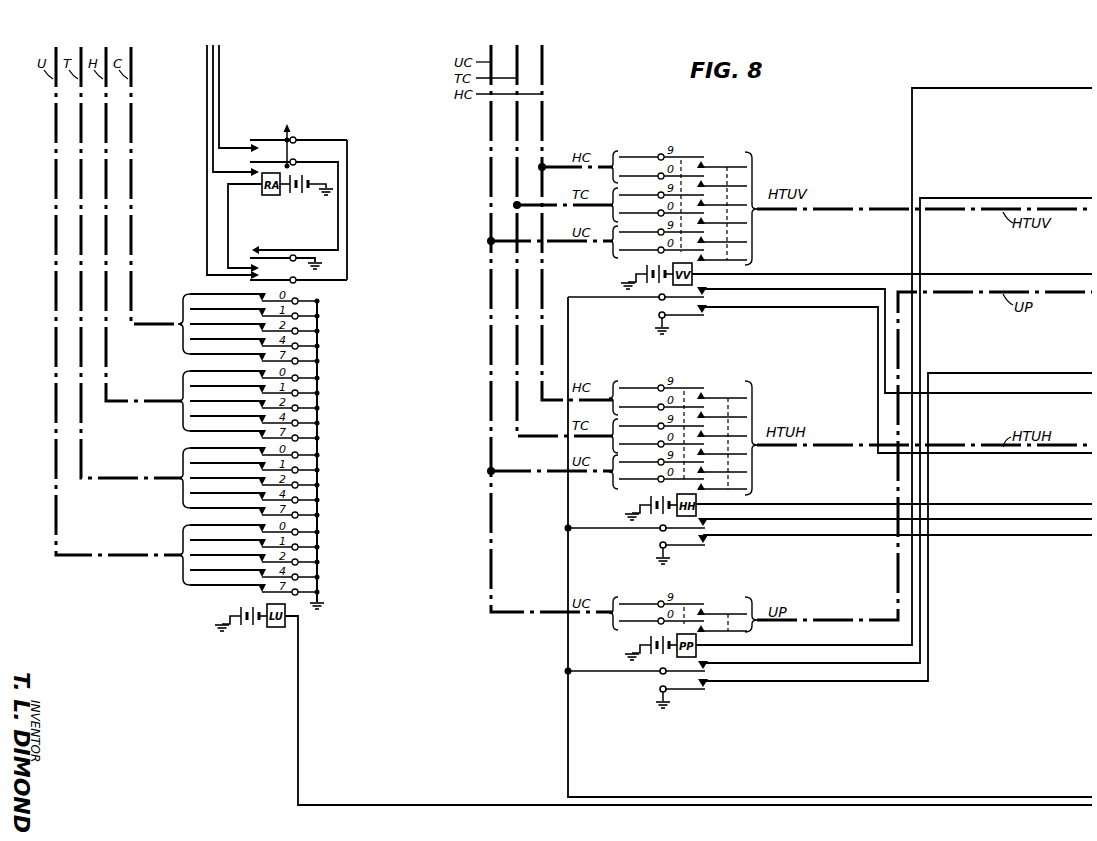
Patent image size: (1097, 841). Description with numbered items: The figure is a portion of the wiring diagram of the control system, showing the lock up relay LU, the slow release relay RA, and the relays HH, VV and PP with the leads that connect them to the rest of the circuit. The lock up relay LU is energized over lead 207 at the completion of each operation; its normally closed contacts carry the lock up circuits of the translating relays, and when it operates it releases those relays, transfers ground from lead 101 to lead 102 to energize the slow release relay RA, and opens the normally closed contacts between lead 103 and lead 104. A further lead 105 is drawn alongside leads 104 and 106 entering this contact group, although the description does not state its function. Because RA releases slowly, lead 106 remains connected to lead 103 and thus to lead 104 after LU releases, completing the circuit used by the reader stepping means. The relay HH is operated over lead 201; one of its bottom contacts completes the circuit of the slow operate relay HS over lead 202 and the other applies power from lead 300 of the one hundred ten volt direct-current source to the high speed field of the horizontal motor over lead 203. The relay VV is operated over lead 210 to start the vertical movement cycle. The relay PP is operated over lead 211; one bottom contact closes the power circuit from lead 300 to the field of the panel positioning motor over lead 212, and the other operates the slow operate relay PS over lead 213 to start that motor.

The lead 101 is at (338, 223).
The lead 102 is at (228, 223).
The lead 103 is at (314, 140).
The lead 104 is at (207, 62).
The conductor 105 is at (213, 78).
The lead 106 is at (219, 93).
The lead 201 is at (962, 504).
The lead 202 is at (1013, 537).
The lead 203 is at (1012, 519).
The lead 207 is at (430, 805).
The lead 210 is at (1003, 274).
The lead 211 is at (1008, 88).
The lead 212 is at (1008, 198).
The lead 213 is at (1003, 373).
The lead 300 is at (568, 333).